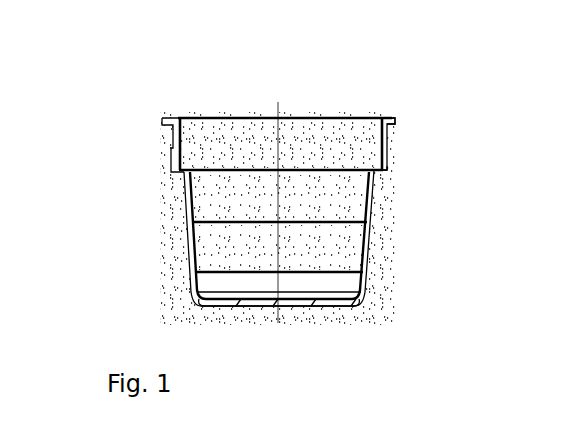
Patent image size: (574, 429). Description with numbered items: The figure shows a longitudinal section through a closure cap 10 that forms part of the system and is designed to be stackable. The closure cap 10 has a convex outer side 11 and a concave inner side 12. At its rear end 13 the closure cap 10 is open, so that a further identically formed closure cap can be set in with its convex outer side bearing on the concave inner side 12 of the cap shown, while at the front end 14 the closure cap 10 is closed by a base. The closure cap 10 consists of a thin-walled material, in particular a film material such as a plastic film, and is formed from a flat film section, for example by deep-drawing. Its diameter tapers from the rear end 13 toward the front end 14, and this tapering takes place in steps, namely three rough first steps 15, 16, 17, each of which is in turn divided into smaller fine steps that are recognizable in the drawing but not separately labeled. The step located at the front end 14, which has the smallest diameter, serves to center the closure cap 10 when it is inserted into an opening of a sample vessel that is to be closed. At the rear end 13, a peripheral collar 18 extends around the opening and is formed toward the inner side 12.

The closure cap 10 is at (145, 162).
The convex outer side 11 is at (185, 215).
The concave inner side 12 is at (360, 190).
The rear end 13 is at (230, 110).
The front end 14 is at (290, 302).
The first step 15 is at (387, 167).
The first step 16 is at (373, 202).
The first step 17 is at (362, 258).
The peripheral collar 18 is at (390, 118).